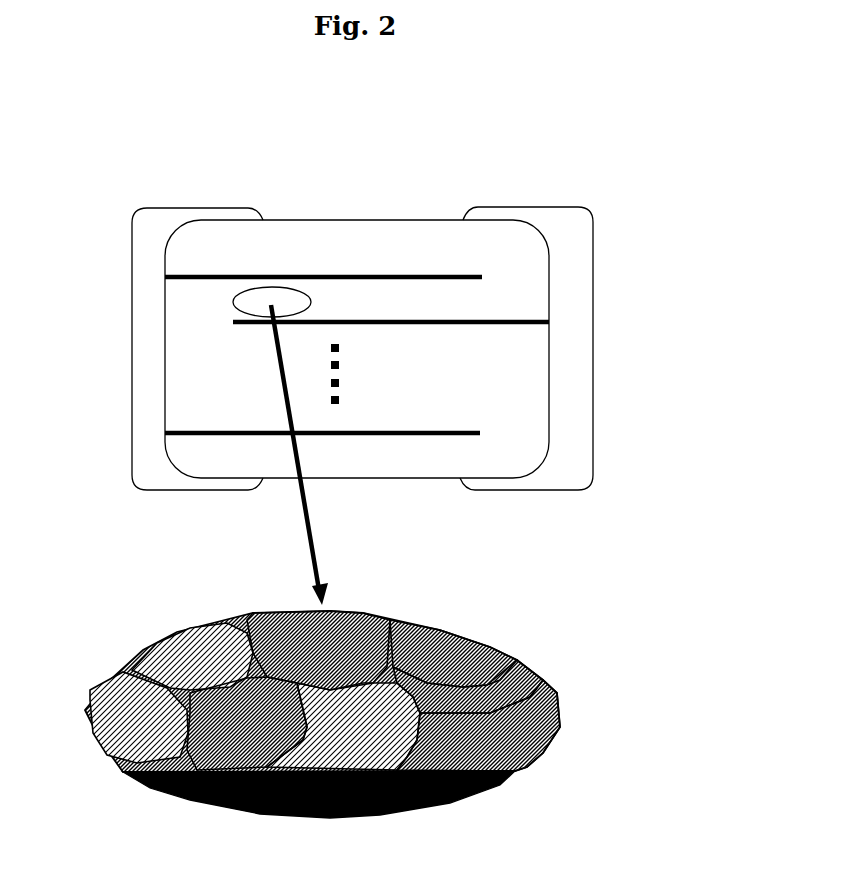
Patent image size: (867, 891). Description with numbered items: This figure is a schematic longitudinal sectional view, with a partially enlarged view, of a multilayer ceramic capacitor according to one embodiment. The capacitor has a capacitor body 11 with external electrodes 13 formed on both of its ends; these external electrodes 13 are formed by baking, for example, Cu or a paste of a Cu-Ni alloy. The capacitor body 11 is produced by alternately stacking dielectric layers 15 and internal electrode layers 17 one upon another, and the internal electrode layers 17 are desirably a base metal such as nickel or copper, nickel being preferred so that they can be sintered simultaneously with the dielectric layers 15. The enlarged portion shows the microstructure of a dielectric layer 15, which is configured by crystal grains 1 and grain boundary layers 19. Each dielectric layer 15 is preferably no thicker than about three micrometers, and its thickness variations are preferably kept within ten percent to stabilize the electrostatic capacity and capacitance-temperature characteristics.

The crystal grain 1 is at (185, 663).
The capacitor body 11 is at (414, 299).
The external electrode 13 is at (580, 310).
The dielectric layer 15 is at (347, 298).
The internal electrode layer 17 is at (268, 275).
The grain boundary layer 19 is at (365, 672).